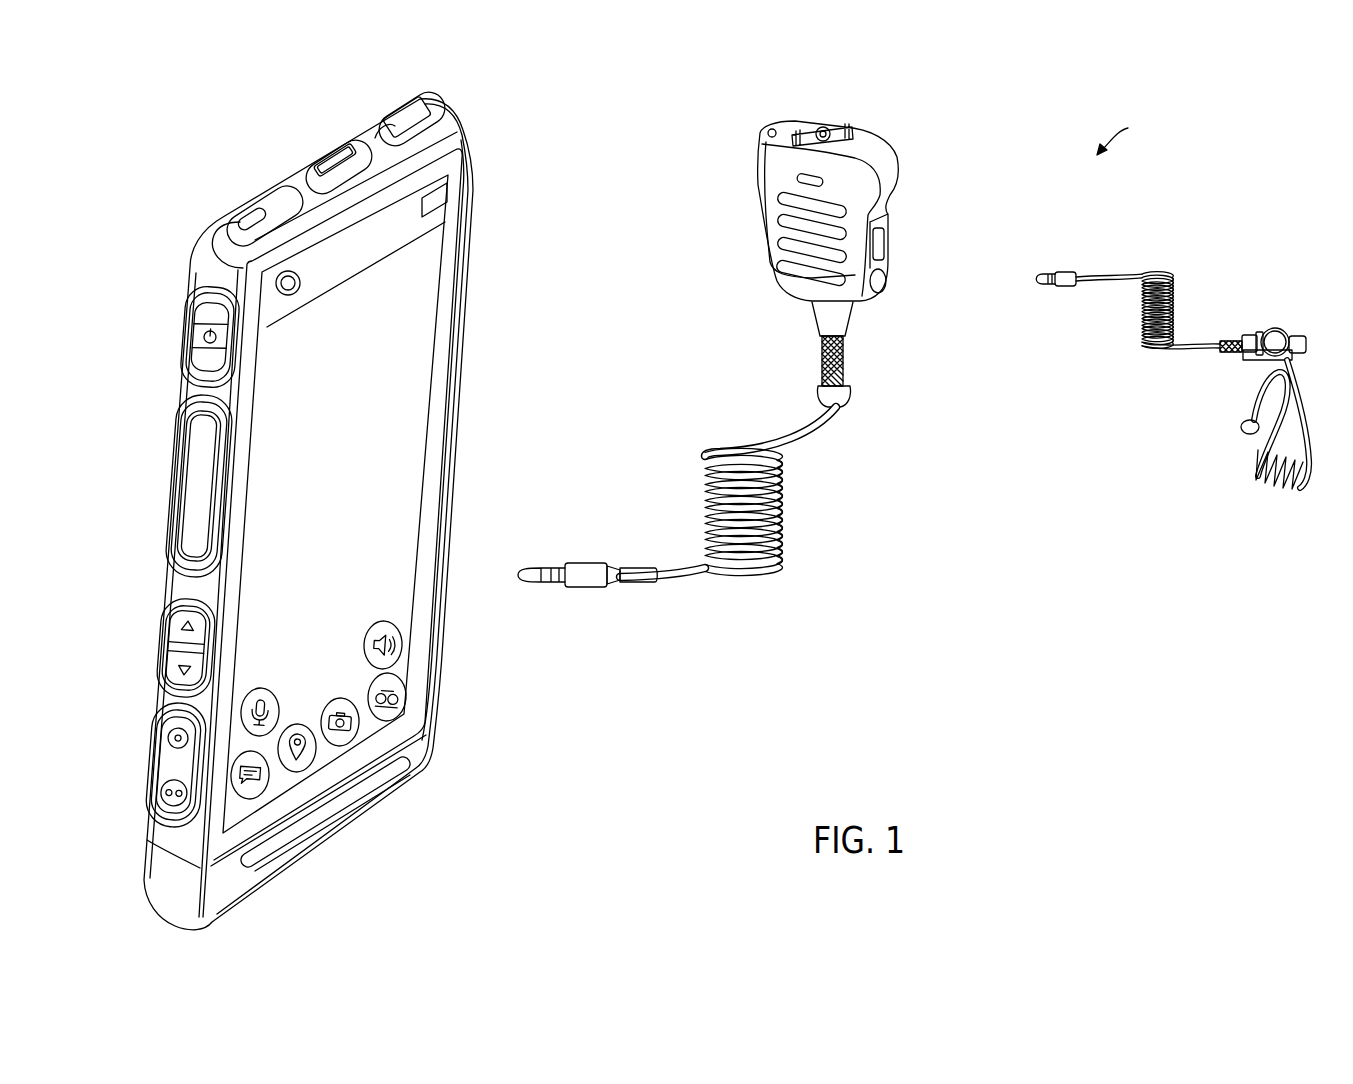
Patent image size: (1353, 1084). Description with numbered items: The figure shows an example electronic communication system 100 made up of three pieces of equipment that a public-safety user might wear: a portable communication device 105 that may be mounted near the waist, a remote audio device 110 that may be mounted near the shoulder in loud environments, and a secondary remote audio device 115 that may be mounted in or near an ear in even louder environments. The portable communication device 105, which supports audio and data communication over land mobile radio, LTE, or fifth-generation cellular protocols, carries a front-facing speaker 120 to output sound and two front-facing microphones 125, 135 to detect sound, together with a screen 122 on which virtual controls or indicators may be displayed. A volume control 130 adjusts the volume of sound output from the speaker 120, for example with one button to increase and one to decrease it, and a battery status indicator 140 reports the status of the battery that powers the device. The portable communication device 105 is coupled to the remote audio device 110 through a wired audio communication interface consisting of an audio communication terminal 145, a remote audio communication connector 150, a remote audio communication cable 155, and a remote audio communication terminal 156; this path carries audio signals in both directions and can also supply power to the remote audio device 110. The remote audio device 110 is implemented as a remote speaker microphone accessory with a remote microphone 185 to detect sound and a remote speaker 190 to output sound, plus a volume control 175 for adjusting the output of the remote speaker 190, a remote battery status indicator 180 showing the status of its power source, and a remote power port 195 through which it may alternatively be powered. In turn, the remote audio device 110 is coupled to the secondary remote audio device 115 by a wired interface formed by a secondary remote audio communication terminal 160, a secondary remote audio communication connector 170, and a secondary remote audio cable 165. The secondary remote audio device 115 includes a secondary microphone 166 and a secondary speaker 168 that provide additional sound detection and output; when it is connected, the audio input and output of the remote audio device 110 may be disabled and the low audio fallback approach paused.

The electronic communication system 100 is at (1135, 133).
The portable communication device 105 is at (454, 110).
The remote audio device 110 is at (885, 162).
The secondary remote audio device 115 is at (1249, 334).
The speaker 120 is at (342, 817).
The screen 122 is at (402, 453).
The microphone 125 is at (441, 192).
The volume control 130 is at (180, 648).
The microphone 135 is at (266, 851).
The battery status indicator 140 is at (252, 211).
The audio communication terminal 145 is at (468, 238).
The remote audio communication connector 150 is at (583, 587).
The remote audio communication cable 155 is at (773, 507).
The remote audio communication terminal 156 is at (847, 327).
The secondary remote audio communication terminal 160 is at (882, 210).
The secondary remote audio cable 165 is at (1143, 321).
The secondary microphone 166 is at (1297, 335).
The secondary speaker 168 is at (1241, 430).
The secondary remote audio communication connector 170 is at (1050, 276).
The volume control 175 is at (810, 132).
The remote battery status indicator 180 is at (772, 130).
The remote microphone 185 is at (797, 178).
The remote speaker 190 is at (778, 244).
The remote power port 195 is at (884, 284).